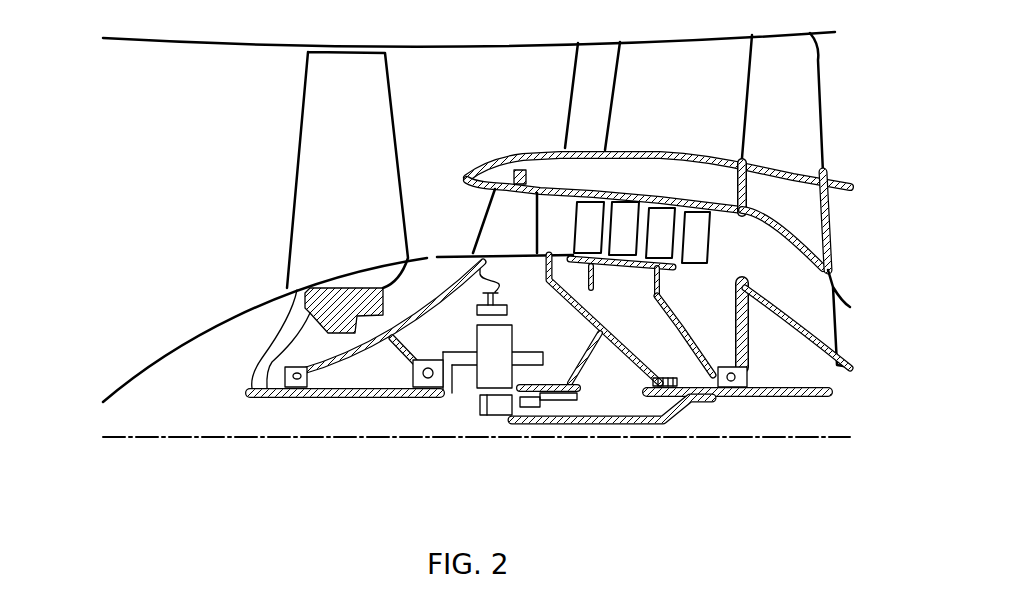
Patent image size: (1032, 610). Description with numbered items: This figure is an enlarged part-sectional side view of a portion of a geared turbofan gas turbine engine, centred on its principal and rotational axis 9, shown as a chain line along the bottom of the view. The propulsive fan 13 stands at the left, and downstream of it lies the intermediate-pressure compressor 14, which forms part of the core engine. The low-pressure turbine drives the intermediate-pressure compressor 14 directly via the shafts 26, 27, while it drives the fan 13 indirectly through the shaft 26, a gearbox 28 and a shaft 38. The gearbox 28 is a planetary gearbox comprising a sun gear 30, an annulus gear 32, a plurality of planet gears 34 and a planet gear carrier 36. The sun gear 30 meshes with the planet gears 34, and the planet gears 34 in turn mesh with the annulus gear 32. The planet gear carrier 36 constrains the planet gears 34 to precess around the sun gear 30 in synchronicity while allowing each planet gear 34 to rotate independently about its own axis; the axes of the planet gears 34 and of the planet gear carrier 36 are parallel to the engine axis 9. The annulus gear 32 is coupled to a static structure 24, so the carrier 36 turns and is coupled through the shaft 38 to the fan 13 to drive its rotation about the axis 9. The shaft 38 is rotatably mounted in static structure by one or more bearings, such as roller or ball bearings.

The principal and rotational axis 9 is at (247, 438).
The propulsive fan 13 is at (318, 138).
The intermediate-pressure compressor 14 is at (660, 222).
The static structure 24 is at (493, 224).
The shaft 26 is at (730, 396).
The shaft 27 is at (690, 327).
The gearbox 28 is at (468, 380).
The sun gear 30 is at (493, 410).
The annulus gear 32 is at (508, 309).
The planet gears 34 is at (492, 358).
The planet gear carrier 36 is at (452, 375).
The shaft 38 is at (318, 398).